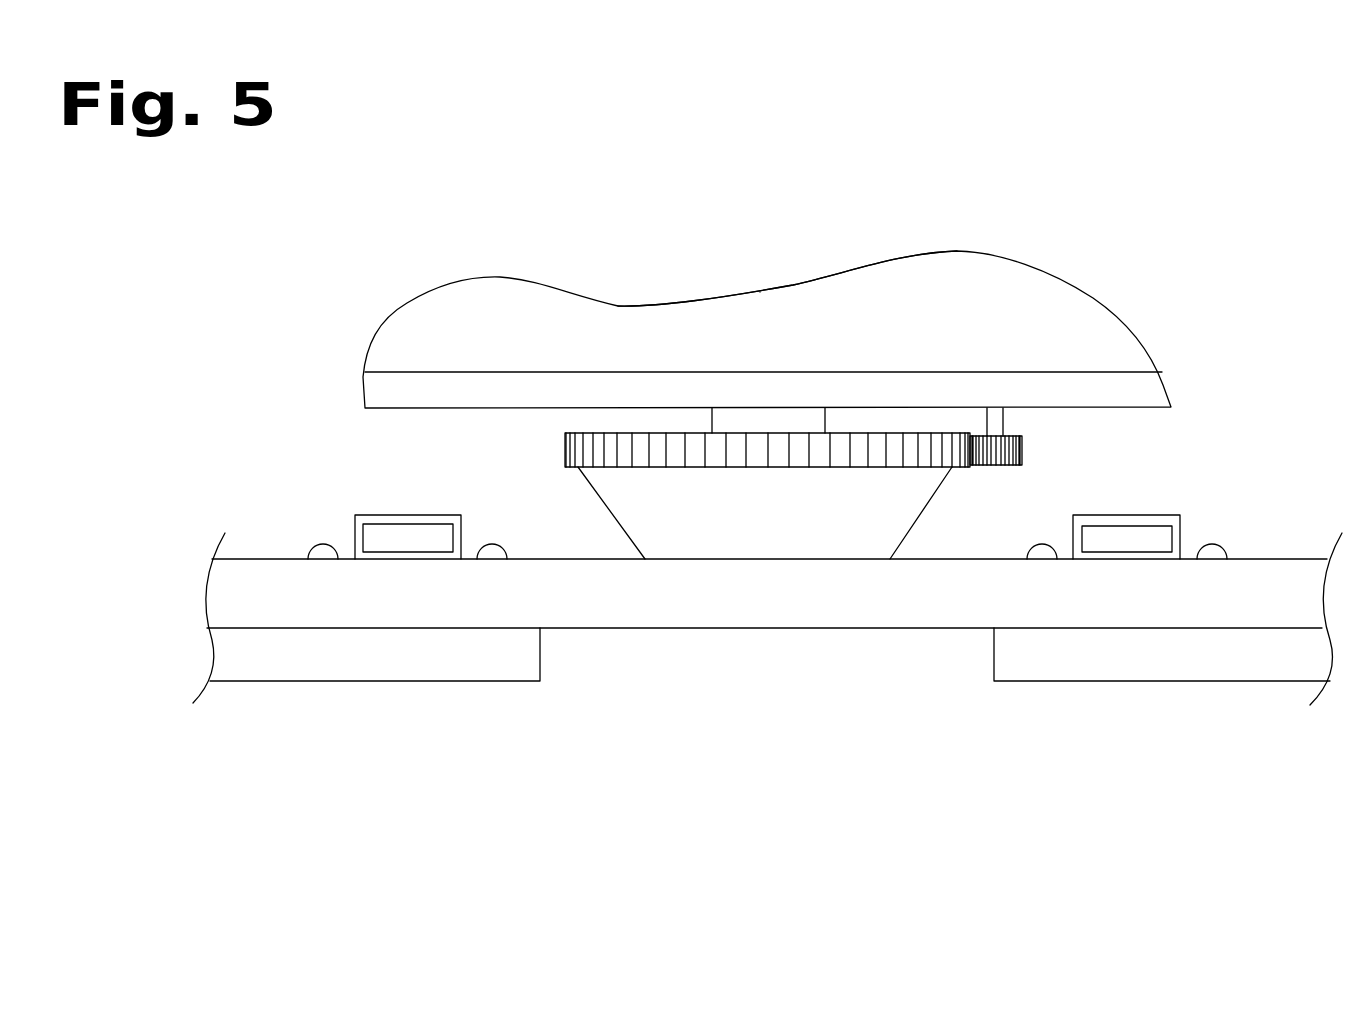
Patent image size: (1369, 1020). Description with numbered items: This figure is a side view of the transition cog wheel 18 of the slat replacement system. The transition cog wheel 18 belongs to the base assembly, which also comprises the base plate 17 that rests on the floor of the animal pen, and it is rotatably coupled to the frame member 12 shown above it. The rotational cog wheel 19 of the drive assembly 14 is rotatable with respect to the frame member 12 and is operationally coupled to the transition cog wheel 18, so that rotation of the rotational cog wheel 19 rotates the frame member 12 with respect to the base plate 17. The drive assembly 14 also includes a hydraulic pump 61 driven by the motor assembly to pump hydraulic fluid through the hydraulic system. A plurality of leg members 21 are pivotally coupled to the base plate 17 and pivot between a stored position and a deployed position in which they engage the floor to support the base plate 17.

The frame member 12 is at (1063, 388).
The drive assembly 14 is at (752, 237).
The base plate 17 is at (805, 607).
The transition cog wheel 18 is at (643, 515).
The rotational cog wheel 19 is at (1003, 450).
The leg members 21 is at (342, 652).
The hydraulic pump 61 is at (795, 313).